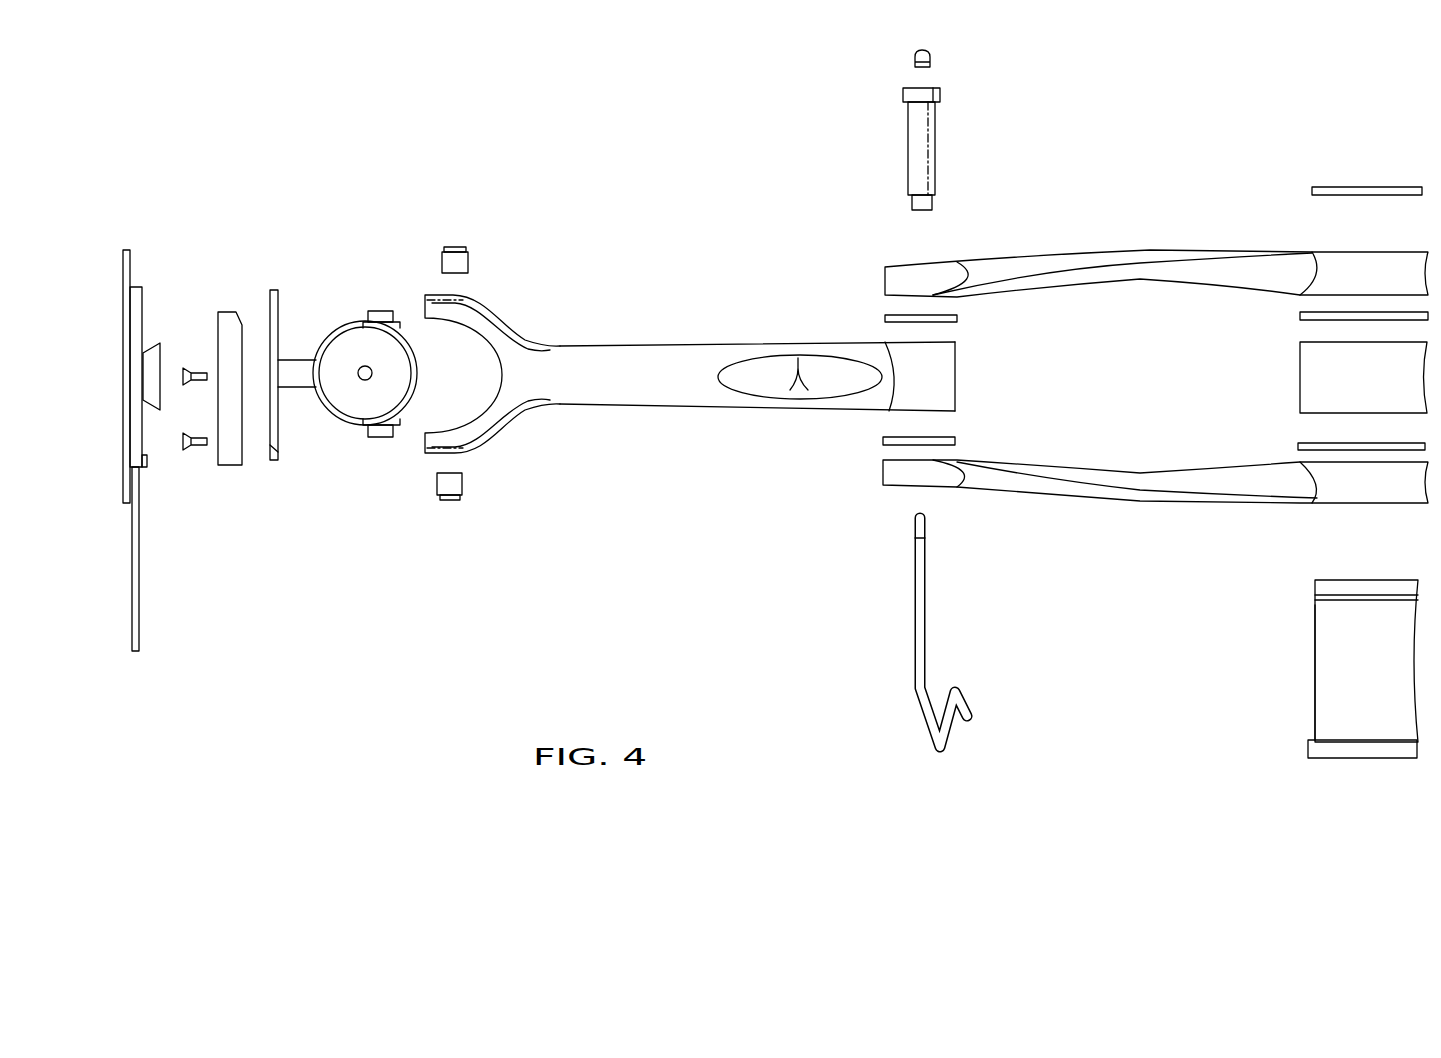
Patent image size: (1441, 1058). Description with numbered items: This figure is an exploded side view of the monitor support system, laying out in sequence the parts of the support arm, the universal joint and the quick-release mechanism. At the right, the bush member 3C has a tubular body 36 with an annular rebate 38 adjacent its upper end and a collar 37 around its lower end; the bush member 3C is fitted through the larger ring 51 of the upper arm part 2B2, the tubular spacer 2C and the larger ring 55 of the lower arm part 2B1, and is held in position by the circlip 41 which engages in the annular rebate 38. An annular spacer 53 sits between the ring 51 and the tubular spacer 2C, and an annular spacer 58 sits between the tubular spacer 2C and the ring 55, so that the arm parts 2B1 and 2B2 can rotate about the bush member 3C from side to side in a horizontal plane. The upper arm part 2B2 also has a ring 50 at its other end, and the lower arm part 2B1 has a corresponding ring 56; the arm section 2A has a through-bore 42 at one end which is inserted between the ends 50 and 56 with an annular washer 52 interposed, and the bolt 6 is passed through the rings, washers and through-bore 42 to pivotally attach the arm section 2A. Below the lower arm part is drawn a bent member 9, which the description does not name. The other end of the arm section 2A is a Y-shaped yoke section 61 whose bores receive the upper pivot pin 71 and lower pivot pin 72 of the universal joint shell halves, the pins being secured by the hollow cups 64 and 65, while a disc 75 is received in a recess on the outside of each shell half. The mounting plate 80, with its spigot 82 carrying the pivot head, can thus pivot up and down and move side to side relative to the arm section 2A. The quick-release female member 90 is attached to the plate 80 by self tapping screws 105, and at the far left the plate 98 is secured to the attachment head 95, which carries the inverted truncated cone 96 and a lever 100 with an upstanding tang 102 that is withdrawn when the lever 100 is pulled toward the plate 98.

The plate 98 is at (131, 250).
The attachment head 95 is at (142, 290).
The inverted truncated cone 96 is at (157, 353).
The upstanding tang 102 is at (147, 462).
The lever 100 is at (139, 612).
The self tapping screws 105 is at (197, 447).
The quick-release female member 90 is at (228, 313).
The mounting plate 80 is at (281, 293).
The spigot 82 is at (296, 372).
The disc 75 is at (347, 398).
The upper pivot pin half 71 is at (383, 312).
The lower pivot pin half 72 is at (382, 437).
The cup 64 is at (463, 260).
The cup 65 is at (450, 490).
The Y-shaped yoke section 61 is at (505, 322).
The arm section 2A is at (657, 363).
The through-bore 42 is at (950, 372).
The bolt 6 is at (925, 155).
The upper arm part 2B2 is at (1105, 257).
The ring 50 is at (917, 265).
The annular washer 52 is at (885, 317).
The larger ring 51 is at (1335, 265).
The circlip 41 is at (1330, 187).
The annular spacer 53 is at (1300, 314).
The tubular spacer 2C is at (1307, 383).
The annular spacer 58 is at (1300, 445).
The lower arm part 2B1 is at (1130, 497).
The ring 56 is at (898, 480).
The larger ring 55 is at (1360, 492).
The hook rod 9 is at (920, 633).
The bush member 3C is at (1357, 708).
The annular rebate 38 is at (1317, 598).
The tubular body 36 is at (1330, 667).
The collar 37 is at (1308, 748).